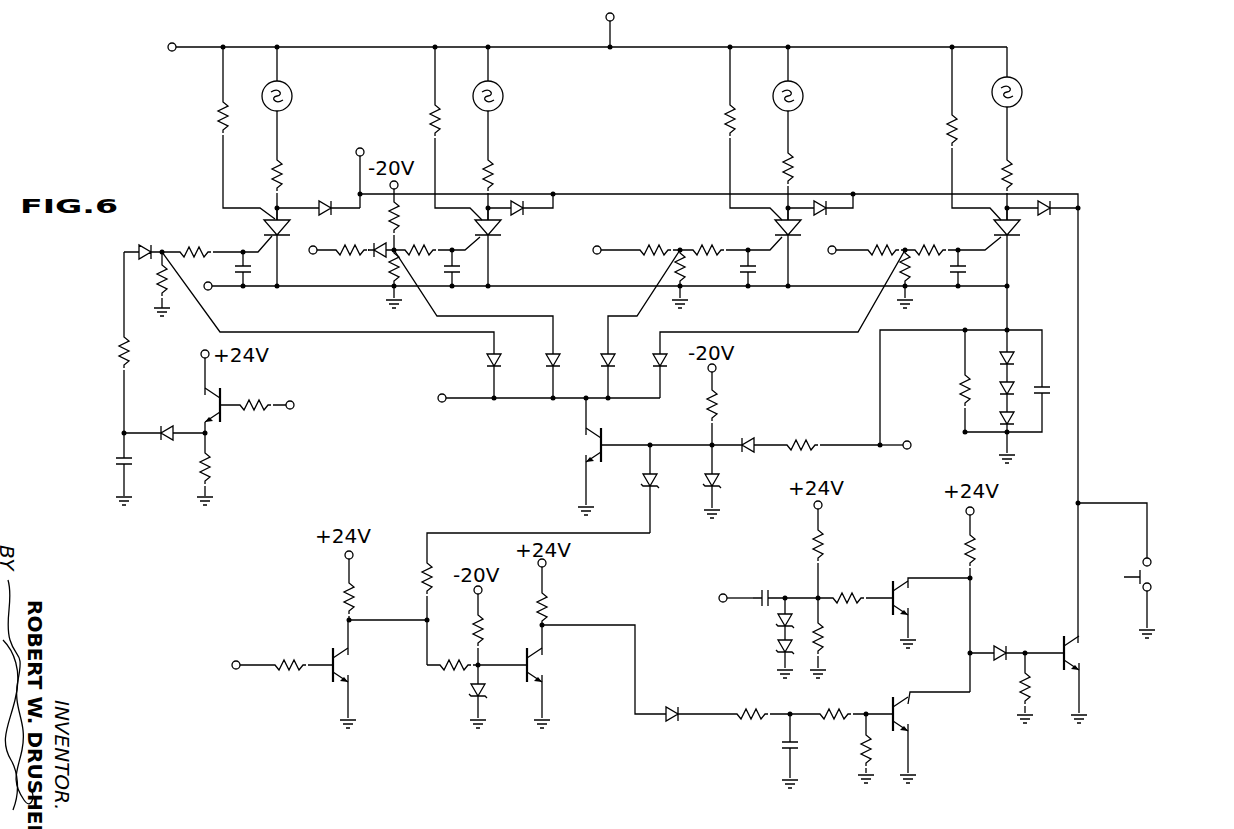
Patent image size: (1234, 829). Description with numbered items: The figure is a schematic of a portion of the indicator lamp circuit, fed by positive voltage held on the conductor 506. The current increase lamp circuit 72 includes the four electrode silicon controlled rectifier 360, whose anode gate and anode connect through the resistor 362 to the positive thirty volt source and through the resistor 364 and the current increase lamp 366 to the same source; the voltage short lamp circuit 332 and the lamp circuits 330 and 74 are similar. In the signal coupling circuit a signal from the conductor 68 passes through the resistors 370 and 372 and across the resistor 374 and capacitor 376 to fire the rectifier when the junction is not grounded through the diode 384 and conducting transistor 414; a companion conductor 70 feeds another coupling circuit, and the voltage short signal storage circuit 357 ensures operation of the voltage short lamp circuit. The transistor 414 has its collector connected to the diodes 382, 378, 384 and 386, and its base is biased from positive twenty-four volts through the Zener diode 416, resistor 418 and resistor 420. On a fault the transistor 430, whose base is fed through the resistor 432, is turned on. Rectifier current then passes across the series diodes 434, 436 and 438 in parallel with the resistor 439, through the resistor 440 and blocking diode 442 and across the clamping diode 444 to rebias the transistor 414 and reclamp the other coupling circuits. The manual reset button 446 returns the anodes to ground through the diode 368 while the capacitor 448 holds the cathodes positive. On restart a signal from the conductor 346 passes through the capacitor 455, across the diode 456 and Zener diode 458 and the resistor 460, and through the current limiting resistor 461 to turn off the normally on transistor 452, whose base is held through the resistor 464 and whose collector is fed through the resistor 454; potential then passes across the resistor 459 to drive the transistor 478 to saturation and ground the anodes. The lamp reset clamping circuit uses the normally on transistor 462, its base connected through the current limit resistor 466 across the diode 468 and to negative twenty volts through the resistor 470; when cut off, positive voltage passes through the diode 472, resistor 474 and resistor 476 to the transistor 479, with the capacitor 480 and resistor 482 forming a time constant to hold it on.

The conductor 506 is at (644, 20).
The voltage short lamp circuit 332 is at (279, 135).
The lamp circuit 330 is at (490, 140).
The resistor 362 is at (728, 122).
The current increase lamp 366 is at (801, 88).
The current increase lamp circuit 72 is at (790, 140).
The resistor 364 is at (791, 168).
The lamp circuit 74 is at (1010, 160).
The diode 368 is at (840, 208).
The resistor 370 is at (658, 244).
The resistor 372 is at (718, 230).
The resistor 374 is at (701, 279).
The capacitor 376 is at (752, 276).
The conductor 68 is at (620, 253).
The conductor 70 is at (862, 253).
The four electrode silicon controlled rectifier 360 is at (804, 228).
The voltage short signal storage circuit 357 is at (122, 386).
The diode 382 is at (488, 360).
The diode 378 is at (546, 365).
The diode 384 is at (601, 365).
The diode 386 is at (654, 365).
The transistor 414 is at (598, 446).
The Zener diode 416 is at (646, 479).
The diode 434 is at (717, 403).
The clamping diode 444 is at (719, 485).
The blocking diode 442 is at (748, 443).
The resistor 440 is at (805, 442).
The conductor 346 is at (895, 448).
The resistor 439 is at (962, 384).
The diode 436 is at (998, 390).
The diode 438 is at (999, 424).
The capacitor 448 is at (1048, 392).
The manual reset button 446 is at (1152, 582).
The resistor 420 is at (347, 586).
The resistor 418 is at (425, 570).
The transistor 430 is at (346, 656).
The resistor 432 is at (288, 652).
The current limit resistor 466 is at (437, 667).
The resistor 470 is at (481, 623).
The diode 468 is at (470, 691).
The transistor 462 is at (540, 663).
The resistor 464 is at (545, 588).
The diode 472 is at (680, 716).
The resistor 474 is at (767, 712).
The resistor 476 is at (828, 712).
The capacitor 480 is at (787, 755).
The resistor 482 is at (863, 748).
The transistor 479 is at (900, 710).
The capacitor 455 is at (773, 595).
The diode 456 is at (773, 618).
The Zener diode 458 is at (778, 650).
The resistor 460 is at (825, 637).
The current limiting resistor 461 is at (847, 595).
The transistor 452 is at (907, 590).
The resistor 454 is at (977, 558).
The resistor 459 is at (1022, 697).
The transistor 478 is at (1080, 662).